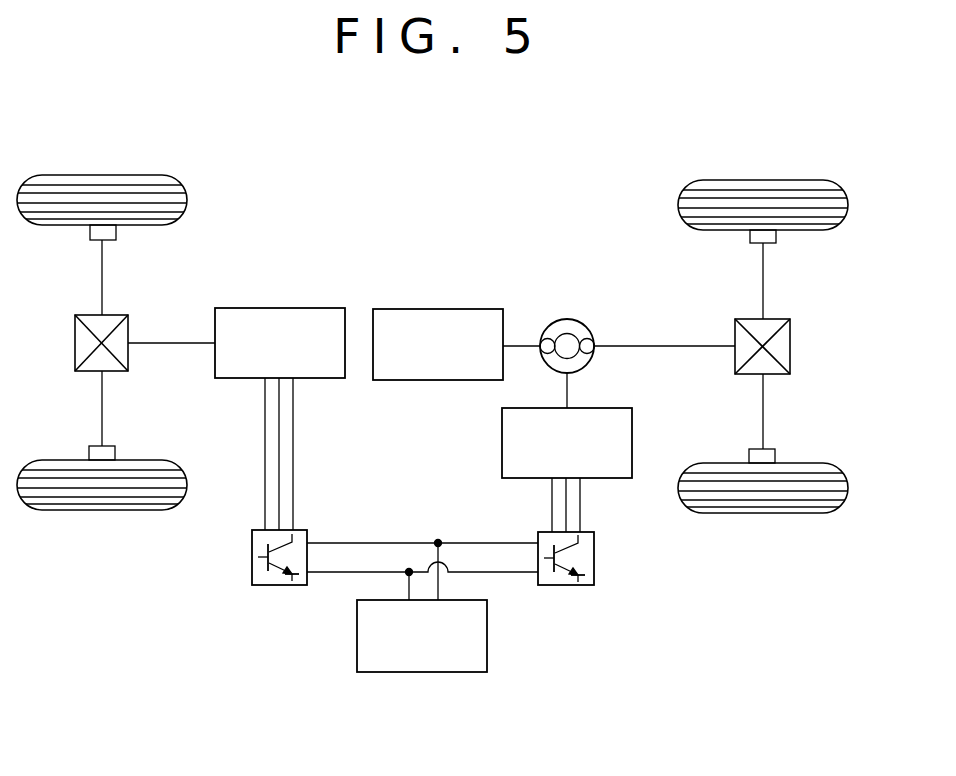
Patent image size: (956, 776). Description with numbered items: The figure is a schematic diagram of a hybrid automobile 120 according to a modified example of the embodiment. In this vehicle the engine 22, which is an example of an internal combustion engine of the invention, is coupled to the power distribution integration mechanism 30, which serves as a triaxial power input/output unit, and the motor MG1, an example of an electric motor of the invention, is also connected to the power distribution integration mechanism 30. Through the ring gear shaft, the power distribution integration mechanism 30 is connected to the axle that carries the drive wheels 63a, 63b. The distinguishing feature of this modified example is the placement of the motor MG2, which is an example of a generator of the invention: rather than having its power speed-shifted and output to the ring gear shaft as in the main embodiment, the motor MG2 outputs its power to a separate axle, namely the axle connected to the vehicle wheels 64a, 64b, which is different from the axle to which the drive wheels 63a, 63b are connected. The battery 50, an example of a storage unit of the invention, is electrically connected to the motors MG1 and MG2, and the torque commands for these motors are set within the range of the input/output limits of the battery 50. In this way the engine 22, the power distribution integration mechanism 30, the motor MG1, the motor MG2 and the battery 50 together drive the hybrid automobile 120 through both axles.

The hybrid automobile 120 is at (436, 168).
The vehicle wheel 64a is at (102, 175).
The vehicle wheel 64b is at (102, 510).
The drive wheel 63a is at (763, 180).
The drive wheel 63b is at (763, 513).
The motor MG2 is at (280, 308).
The motor MG1 is at (502, 445).
The engine 22 is at (440, 309).
The power distribution integration mechanism 30 is at (566, 319).
The battery 50 is at (488, 632).